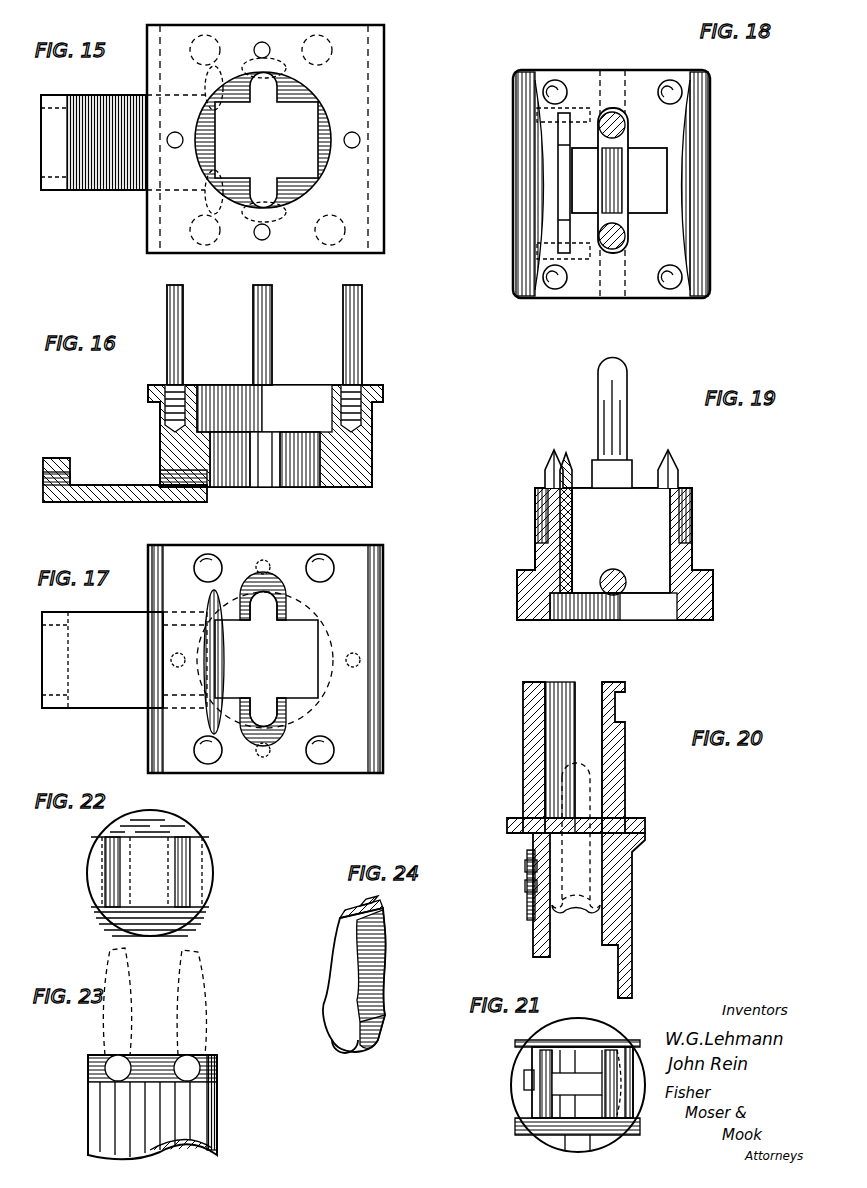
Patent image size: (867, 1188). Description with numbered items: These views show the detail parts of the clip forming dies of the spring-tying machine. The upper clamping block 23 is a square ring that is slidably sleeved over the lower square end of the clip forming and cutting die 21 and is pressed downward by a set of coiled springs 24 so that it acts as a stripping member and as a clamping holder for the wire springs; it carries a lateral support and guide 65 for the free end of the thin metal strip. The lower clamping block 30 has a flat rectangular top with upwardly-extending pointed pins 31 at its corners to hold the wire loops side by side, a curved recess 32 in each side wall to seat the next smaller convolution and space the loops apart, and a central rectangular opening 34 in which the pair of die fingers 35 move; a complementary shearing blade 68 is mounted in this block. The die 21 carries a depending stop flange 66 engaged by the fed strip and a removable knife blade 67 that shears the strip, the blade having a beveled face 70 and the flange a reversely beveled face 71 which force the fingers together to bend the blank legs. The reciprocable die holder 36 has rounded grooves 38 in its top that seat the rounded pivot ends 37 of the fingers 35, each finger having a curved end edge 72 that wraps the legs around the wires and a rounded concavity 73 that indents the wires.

In FIG. 20, the clip forming and cutting die 21 is at (632, 878).
In FIG. 21, the clip forming and cutting die 21 is at (618, 1035).
In FIG. 15, the square clamping ring or block 23 is at (383, 204).
In FIG. 16, the square clamping ring or block 23 is at (372, 452).
In FIG. 17, the square clamping ring or block 23 is at (368, 632).
In FIG. 15, the coiled springs 24 is at (360, 138).
In FIG. 16, the coiled springs 24 is at (362, 340).
In FIG. 18, the lower clamping block 30 is at (650, 298).
In FIG. 19, the lower clamping block 30 is at (692, 560).
In FIG. 18, the pointed projections or pins 31 is at (565, 85).
In FIG. 19, the pointed projections or pins 31 is at (688, 462).
In FIG. 18, the concavity or curved recess 32 is at (545, 185).
In FIG. 19, the concavity or curved recess 32 is at (540, 525).
In FIG. 18, the rectangular opening 34 is at (667, 182).
In FIG. 19, the rectangular opening 34 is at (670, 525).
In FIG. 24, the bent die members or fingers 35 is at (332, 955).
In FIG. 22, the reciprocable die holder 36 is at (200, 906).
In FIG. 23, the reciprocable die holder 36 is at (152, 1107).
In FIG. 24, the rounded pivot end 37 is at (330, 1042).
In FIG. 22, the rounded groove 38 is at (110, 888).
In FIG. 23, the rounded groove 38 is at (88, 1070).
In FIG. 15, the lateral support and guide 65 is at (110, 190).
In FIG. 16, the lateral support and guide 65 is at (115, 502).
In FIG. 17, the lateral support and guide 65 is at (124, 660).
In FIG. 20, the depending flange 66 is at (632, 970).
In FIG. 21, the depending flange 66 is at (625, 1065).
In FIG. 20, the knife blade 67 is at (533, 945).
In FIG. 21, the knife blade 67 is at (535, 1110).
In FIG. 18, the complementary shearing blade 68 is at (570, 205).
In FIG. 19, the complementary shearing blade 68 is at (572, 470).
In FIG. 20, the beveled face 70 is at (550, 952).
In FIG. 20, the reversely beveled face 71 is at (618, 992).
In FIG. 24, the curved end edges 72 is at (345, 910).
In FIG. 24, the rounded concavities 73 is at (378, 900).